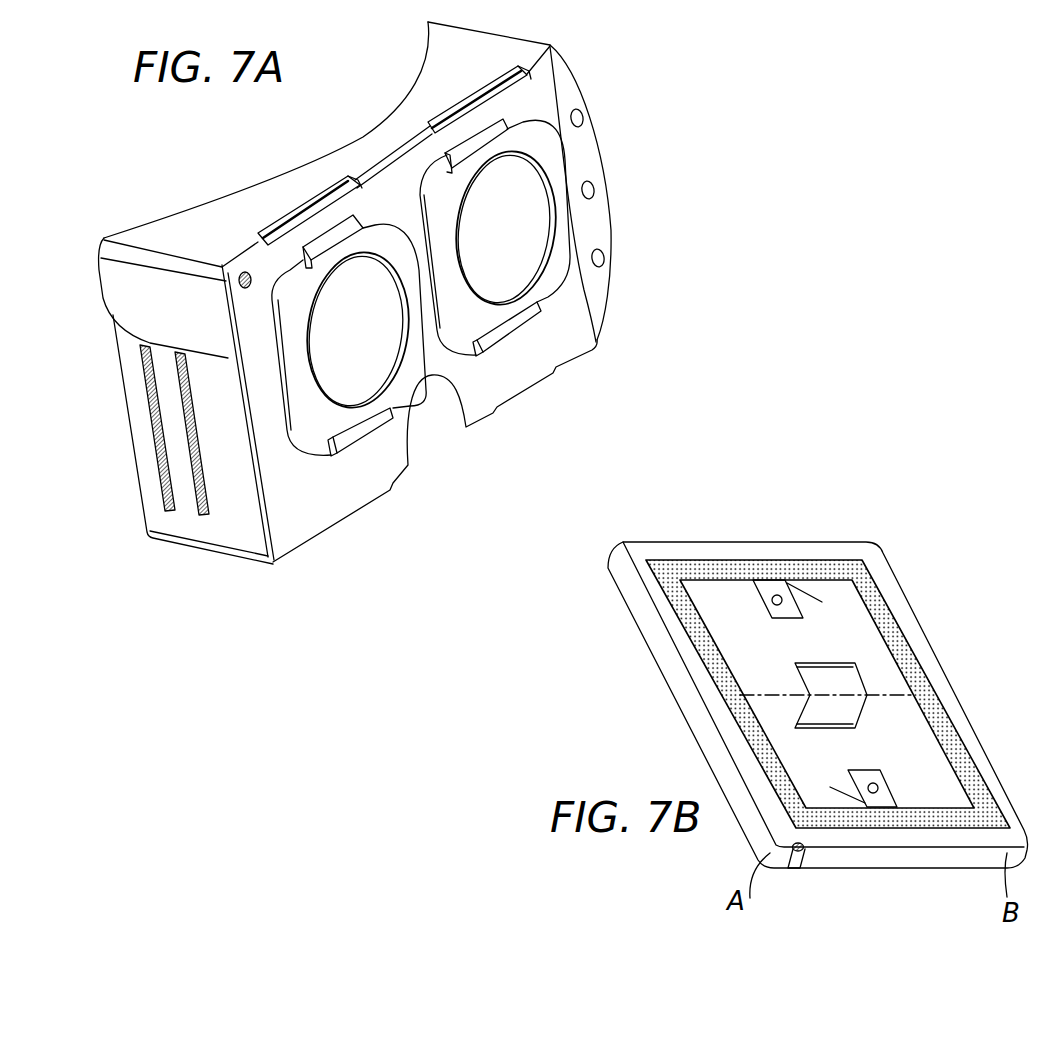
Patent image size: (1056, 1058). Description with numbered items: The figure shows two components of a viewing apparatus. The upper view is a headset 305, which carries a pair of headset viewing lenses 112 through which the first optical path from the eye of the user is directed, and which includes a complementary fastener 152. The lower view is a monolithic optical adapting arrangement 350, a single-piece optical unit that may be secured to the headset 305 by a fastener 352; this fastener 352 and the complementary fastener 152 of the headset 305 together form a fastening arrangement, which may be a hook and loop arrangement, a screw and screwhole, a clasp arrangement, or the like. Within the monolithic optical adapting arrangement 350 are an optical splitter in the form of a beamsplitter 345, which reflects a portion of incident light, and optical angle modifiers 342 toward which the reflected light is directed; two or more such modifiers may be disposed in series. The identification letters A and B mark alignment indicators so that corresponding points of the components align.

In FIG. 7A, the headset 305 is at (642, 186).
In FIG. 7A, the complementary fastener 152 is at (244, 272).
In FIG. 7A, the headset viewing lens 112 is at (517, 273).
In FIG. 7B, the monolithic optical adapting arrangement 350 is at (943, 837).
In FIG. 7B, the optical angle modifier 342 is at (770, 588).
In FIG. 7B, the beamsplitter 345 is at (803, 670).
In FIG. 7B, the fastener 352 is at (793, 857).